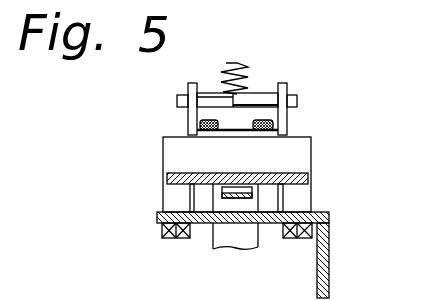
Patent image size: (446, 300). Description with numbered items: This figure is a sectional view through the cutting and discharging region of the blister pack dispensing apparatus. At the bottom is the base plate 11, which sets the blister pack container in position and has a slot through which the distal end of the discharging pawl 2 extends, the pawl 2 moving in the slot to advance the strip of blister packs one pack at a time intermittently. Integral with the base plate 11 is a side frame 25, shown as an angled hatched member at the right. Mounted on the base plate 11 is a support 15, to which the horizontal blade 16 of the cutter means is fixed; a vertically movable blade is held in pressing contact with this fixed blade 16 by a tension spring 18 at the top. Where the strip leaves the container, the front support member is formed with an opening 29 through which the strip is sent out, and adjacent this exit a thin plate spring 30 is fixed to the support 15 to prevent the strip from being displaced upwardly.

The discharging pawl 2 is at (248, 240).
The base plate 11 is at (157, 218).
The support 15 is at (307, 155).
The horizontal blade 16 is at (309, 178).
The tension spring 18 is at (242, 63).
The side frame 25 is at (329, 262).
The opening 29 is at (280, 195).
The thin plate spring 30 is at (232, 193).